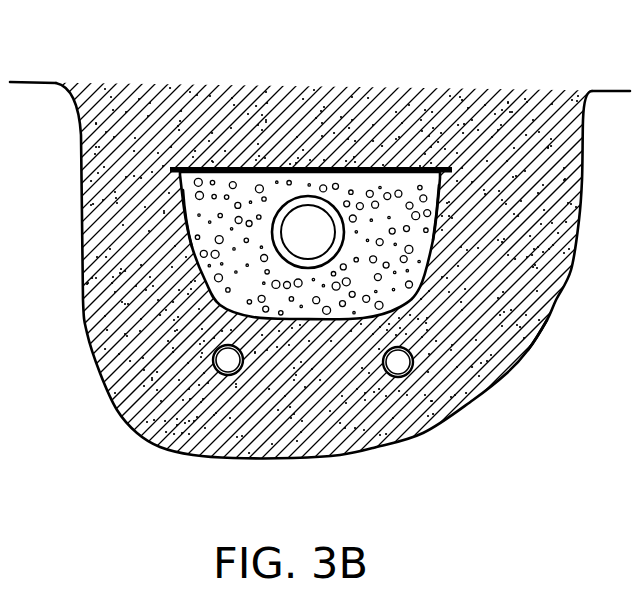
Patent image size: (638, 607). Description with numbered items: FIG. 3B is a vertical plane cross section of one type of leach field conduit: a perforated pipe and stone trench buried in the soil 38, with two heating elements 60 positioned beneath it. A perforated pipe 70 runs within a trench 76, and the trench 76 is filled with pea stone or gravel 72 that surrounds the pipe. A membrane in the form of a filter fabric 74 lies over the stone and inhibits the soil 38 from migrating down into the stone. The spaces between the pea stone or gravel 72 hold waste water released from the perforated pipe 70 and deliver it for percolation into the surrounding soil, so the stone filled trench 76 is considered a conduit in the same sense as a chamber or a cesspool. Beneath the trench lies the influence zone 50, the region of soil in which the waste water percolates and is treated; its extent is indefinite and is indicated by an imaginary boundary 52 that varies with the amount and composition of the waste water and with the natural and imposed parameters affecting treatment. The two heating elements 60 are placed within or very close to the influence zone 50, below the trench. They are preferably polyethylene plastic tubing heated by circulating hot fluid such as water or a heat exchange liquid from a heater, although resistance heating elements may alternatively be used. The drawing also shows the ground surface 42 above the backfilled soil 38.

The soil 38 is at (170, 139).
The ground surface 42 is at (339, 90).
The influence zone 50 is at (447, 277).
The imaginary boundary 52 is at (477, 340).
The heating elements 60 is at (399, 379).
The perforated pipe 70 is at (322, 244).
The pea stone or gravel 72 is at (190, 247).
The filter fabric 74 is at (222, 165).
The trench 76 is at (430, 207).